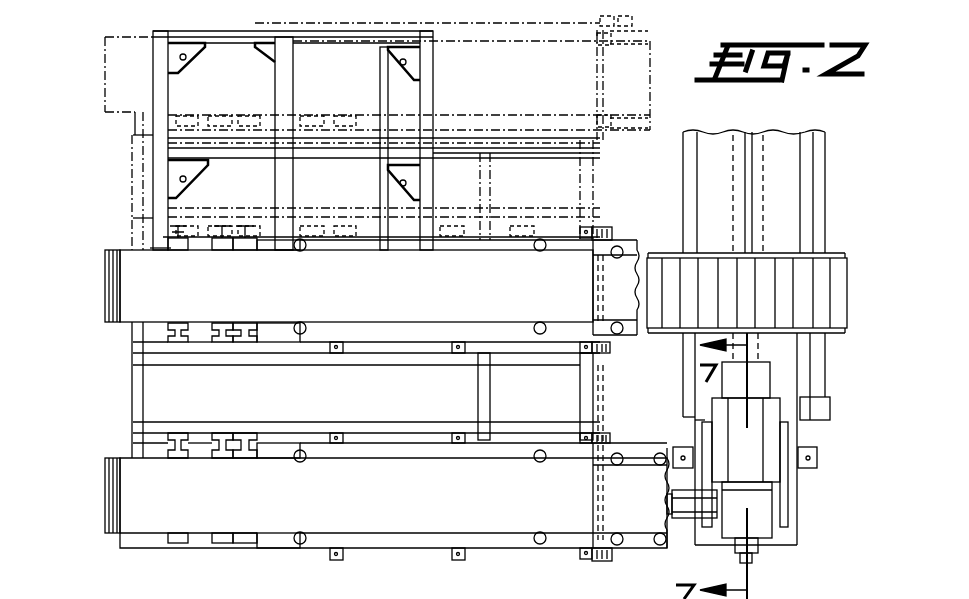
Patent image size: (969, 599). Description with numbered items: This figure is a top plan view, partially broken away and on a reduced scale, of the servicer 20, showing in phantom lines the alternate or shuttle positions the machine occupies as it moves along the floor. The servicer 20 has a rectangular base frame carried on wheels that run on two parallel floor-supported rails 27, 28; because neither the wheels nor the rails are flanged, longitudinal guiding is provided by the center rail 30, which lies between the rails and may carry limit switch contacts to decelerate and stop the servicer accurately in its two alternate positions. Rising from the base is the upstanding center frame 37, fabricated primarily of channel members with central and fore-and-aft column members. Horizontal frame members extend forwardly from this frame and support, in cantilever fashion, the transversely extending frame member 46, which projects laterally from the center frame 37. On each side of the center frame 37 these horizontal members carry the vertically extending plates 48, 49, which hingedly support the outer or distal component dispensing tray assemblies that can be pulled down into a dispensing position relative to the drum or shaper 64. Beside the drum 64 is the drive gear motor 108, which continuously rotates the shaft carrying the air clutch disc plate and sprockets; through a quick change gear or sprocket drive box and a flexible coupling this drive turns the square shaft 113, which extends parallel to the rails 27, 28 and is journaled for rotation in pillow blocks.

The servicer 20 is at (128, 397).
The rail 27 is at (166, 96).
The rail 28 is at (433, 80).
The center rail 30 is at (293, 74).
The center frame 37 is at (492, 400).
The transversely extending frame member 46 is at (593, 393).
The vertically extending plate 48 is at (619, 227).
The vertically extending plate 49 is at (610, 347).
The drum or shaper 64 is at (847, 259).
The drive gear motor 108 is at (687, 520).
The square shaft 113 is at (380, 190).